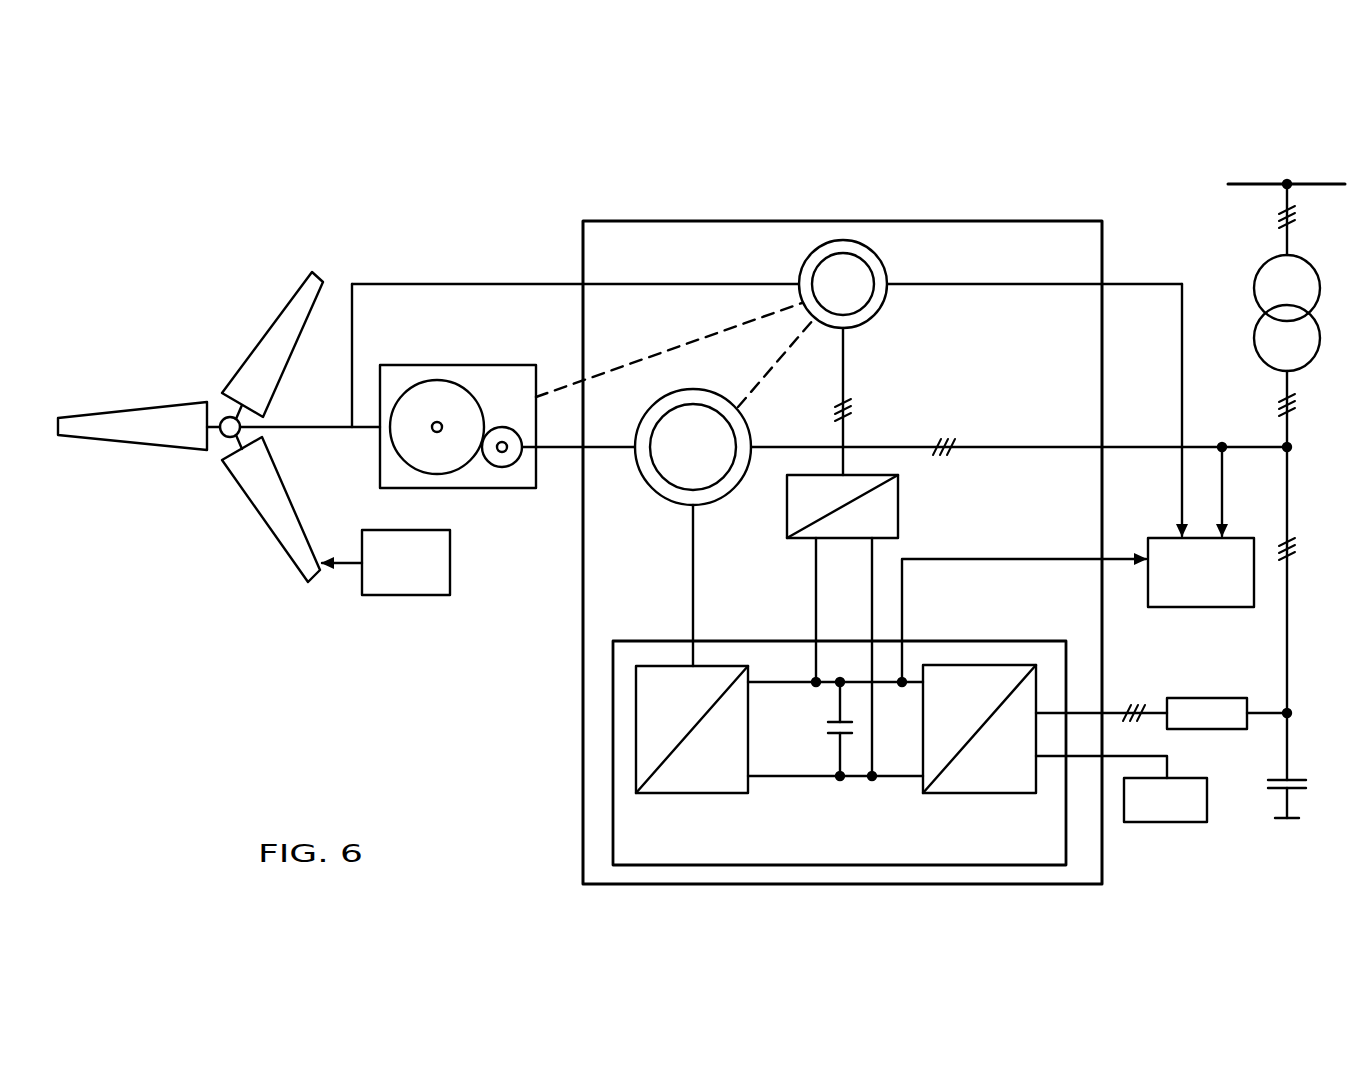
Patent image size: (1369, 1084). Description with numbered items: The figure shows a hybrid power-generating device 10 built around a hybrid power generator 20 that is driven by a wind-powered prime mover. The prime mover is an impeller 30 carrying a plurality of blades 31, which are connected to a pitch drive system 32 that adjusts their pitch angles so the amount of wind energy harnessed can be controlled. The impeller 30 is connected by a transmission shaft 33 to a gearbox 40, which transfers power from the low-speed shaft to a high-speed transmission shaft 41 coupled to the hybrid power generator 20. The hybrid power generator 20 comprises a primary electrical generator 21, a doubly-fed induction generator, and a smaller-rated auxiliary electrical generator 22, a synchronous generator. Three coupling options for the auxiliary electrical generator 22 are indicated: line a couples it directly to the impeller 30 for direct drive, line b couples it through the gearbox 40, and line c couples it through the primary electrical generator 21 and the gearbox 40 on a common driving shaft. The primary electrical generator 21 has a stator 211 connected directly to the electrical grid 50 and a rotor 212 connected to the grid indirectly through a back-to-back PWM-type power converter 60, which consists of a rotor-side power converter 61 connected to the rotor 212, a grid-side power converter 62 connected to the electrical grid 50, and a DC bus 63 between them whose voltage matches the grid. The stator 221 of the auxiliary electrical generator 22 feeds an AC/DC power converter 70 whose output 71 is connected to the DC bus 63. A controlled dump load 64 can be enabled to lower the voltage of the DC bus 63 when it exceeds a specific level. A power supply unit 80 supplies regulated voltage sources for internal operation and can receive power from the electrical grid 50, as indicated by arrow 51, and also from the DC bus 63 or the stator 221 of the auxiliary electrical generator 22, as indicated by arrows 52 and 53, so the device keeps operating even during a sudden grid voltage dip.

The hybrid power-generating device 10 is at (444, 160).
The hybrid power generator 20 is at (984, 218).
The primary electrical generator 21 is at (693, 487).
The stator 211 is at (655, 500).
The rotor 212 is at (725, 480).
The auxiliary electrical generator 22 is at (823, 238).
The stator 221 is at (818, 249).
The impeller 30 is at (152, 324).
The blades 31 is at (283, 320).
The pitch drive system 32 is at (402, 597).
The transmission shaft 33 is at (321, 432).
The gearbox 40 is at (455, 352).
The transmission shaft 41 is at (560, 450).
The electrical grid 50 is at (1243, 158).
The arrow 51 is at (1225, 505).
The arrow 52 is at (1022, 560).
The arrow 53 is at (1183, 378).
The back-to-back PWM-type power converter 60 is at (981, 638).
The rotor-side power converter 61 is at (690, 795).
The grid-side power converter 62 is at (982, 795).
The DC bus 63 is at (814, 730).
The controlled dump load 64 is at (1168, 825).
The AC/DC power converter 70 is at (912, 496).
The output 71 is at (872, 615).
The power supply unit 80 is at (1205, 620).
The line a is at (522, 282).
The line b is at (665, 348).
The line c is at (792, 358).